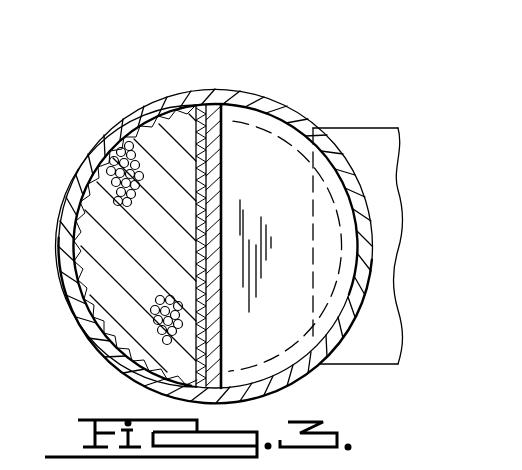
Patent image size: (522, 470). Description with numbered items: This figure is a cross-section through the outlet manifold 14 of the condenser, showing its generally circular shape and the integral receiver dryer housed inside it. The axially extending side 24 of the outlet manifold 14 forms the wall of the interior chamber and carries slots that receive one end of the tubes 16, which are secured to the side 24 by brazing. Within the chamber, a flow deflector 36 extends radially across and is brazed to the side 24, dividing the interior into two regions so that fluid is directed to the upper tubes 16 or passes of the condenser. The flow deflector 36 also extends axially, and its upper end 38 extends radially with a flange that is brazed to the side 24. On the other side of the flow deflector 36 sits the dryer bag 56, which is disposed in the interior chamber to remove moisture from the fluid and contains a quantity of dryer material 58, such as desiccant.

The outlet manifold 14 is at (191, 66).
The tubes 16 is at (363, 147).
The side 24 is at (266, 106).
The flow deflector 36 is at (230, 126).
The upper end 38 is at (278, 170).
The dryer bag 56 is at (72, 182).
The dryer material 58 is at (126, 144).